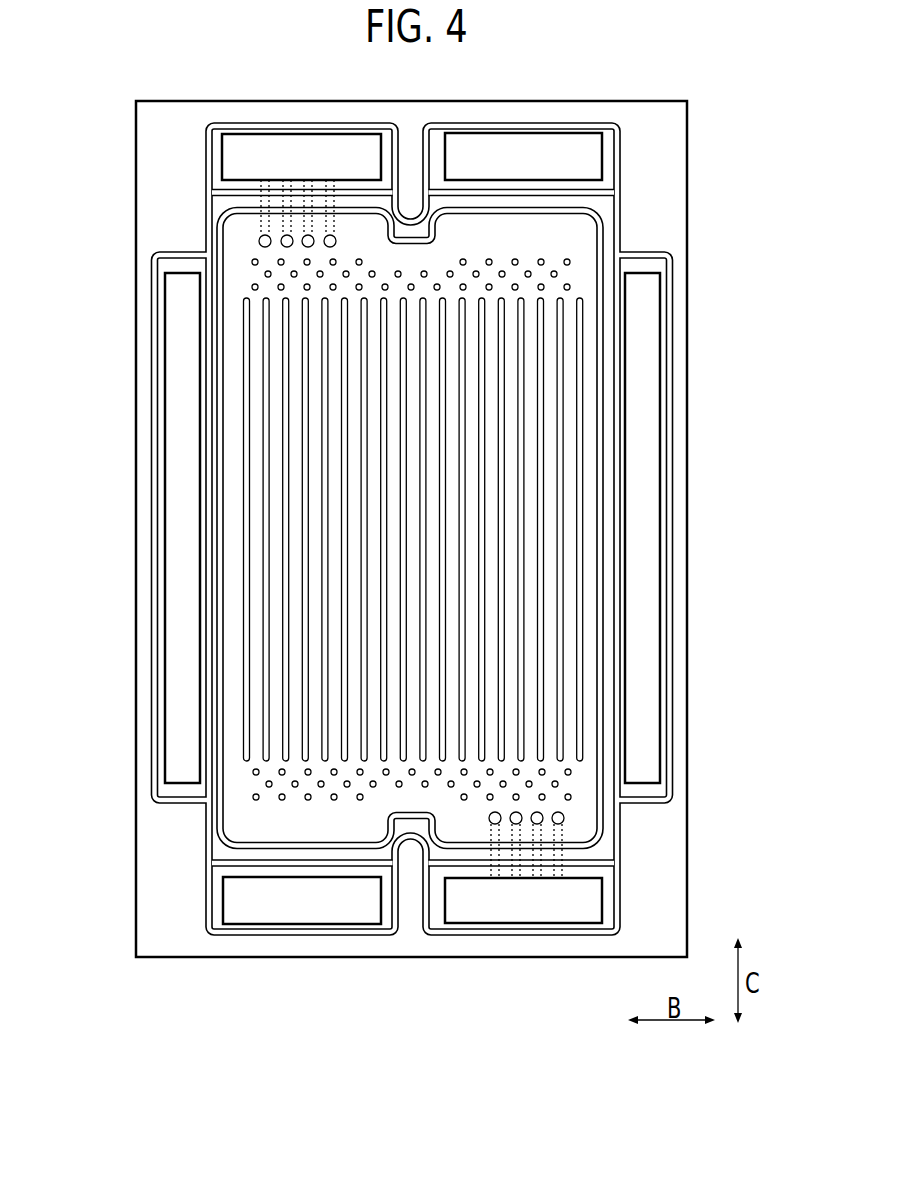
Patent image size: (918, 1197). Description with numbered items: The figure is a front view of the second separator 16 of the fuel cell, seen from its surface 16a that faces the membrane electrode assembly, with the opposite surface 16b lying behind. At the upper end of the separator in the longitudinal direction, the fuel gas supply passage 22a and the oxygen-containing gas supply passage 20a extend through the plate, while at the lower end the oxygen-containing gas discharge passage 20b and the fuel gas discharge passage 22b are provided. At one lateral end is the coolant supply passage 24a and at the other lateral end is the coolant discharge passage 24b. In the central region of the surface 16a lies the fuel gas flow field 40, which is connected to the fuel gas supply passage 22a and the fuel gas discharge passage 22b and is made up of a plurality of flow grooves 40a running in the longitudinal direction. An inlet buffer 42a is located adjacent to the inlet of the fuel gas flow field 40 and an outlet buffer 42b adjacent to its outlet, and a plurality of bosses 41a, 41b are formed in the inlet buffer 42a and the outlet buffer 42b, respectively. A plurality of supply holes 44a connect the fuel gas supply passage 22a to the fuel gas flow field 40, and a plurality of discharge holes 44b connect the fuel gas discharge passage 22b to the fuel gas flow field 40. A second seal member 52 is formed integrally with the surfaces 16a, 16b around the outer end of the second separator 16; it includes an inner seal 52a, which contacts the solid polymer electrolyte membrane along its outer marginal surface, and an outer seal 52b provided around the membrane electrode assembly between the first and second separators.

The second separator 16 is at (601, 58).
The surface 16a is at (623, 978).
The surface 16b is at (573, 977).
The oxygen-containing gas supply passage 20a is at (523, 156).
The oxygen-containing gas discharge passage 20b is at (302, 900).
The fuel gas supply passage 22a is at (301, 157).
The fuel gas discharge passage 22b is at (523, 900).
The coolant supply passage 24a is at (640, 668).
The coolant discharge passage 24b is at (186, 670).
The fuel gas flow field 40 is at (502, 529).
The flow grooves 40a is at (549, 493).
The bosses 41a is at (543, 259).
The bosses 41b is at (281, 800).
The inlet buffer 42a is at (503, 246).
The outlet buffer 42b is at (323, 813).
The supply holes 44a is at (259, 242).
The discharge holes 44b is at (564, 818).
The second seal member 52 is at (688, 162).
The inner seal 52a is at (604, 628).
The outer seal 52b is at (232, 196).